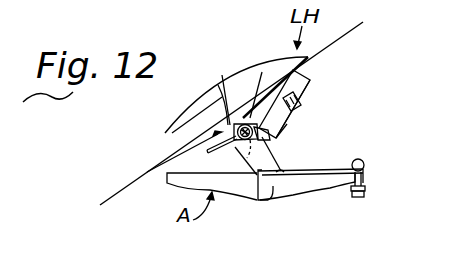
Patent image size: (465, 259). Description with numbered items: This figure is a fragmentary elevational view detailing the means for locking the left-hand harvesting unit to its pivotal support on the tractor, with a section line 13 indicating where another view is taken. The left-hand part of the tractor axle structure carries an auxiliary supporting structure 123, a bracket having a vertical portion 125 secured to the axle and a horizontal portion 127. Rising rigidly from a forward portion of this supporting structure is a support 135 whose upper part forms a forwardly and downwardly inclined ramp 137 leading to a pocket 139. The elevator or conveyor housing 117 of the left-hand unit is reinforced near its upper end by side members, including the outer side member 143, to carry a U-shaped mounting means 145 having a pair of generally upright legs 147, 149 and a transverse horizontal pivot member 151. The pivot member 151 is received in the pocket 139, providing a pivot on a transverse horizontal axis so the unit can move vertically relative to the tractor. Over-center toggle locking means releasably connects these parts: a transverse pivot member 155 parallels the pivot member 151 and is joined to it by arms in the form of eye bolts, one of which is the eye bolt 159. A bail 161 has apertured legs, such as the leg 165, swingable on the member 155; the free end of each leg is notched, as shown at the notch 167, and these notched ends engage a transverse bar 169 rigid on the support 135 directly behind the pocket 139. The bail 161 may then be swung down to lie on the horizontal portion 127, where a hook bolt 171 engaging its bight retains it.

The section line 13- 13 is at (124, 208).
The elevator or conveyor housing 117 is at (171, 133).
The auxiliary supporting structure 123 is at (325, 199).
The vertical portion 125 is at (262, 199).
The horizontal portion 127 is at (335, 168).
The support 135 is at (262, 157).
The ramp 137 is at (208, 152).
The pocket 139 is at (231, 156).
The outer side member 143 is at (238, 82).
The U-shaped mounting means 145 is at (215, 130).
The upright leg 147 is at (262, 72).
The upright leg 149 is at (222, 75).
The pivot member 151 is at (218, 85).
The transverse pivot member 155 is at (298, 106).
The eye bolt 159 is at (287, 124).
The bail 161 is at (308, 70).
The apertured leg 165 is at (306, 88).
The notch 167 is at (273, 132).
The transverse bar 169 is at (262, 142).
The hook bolt 171 is at (365, 165).